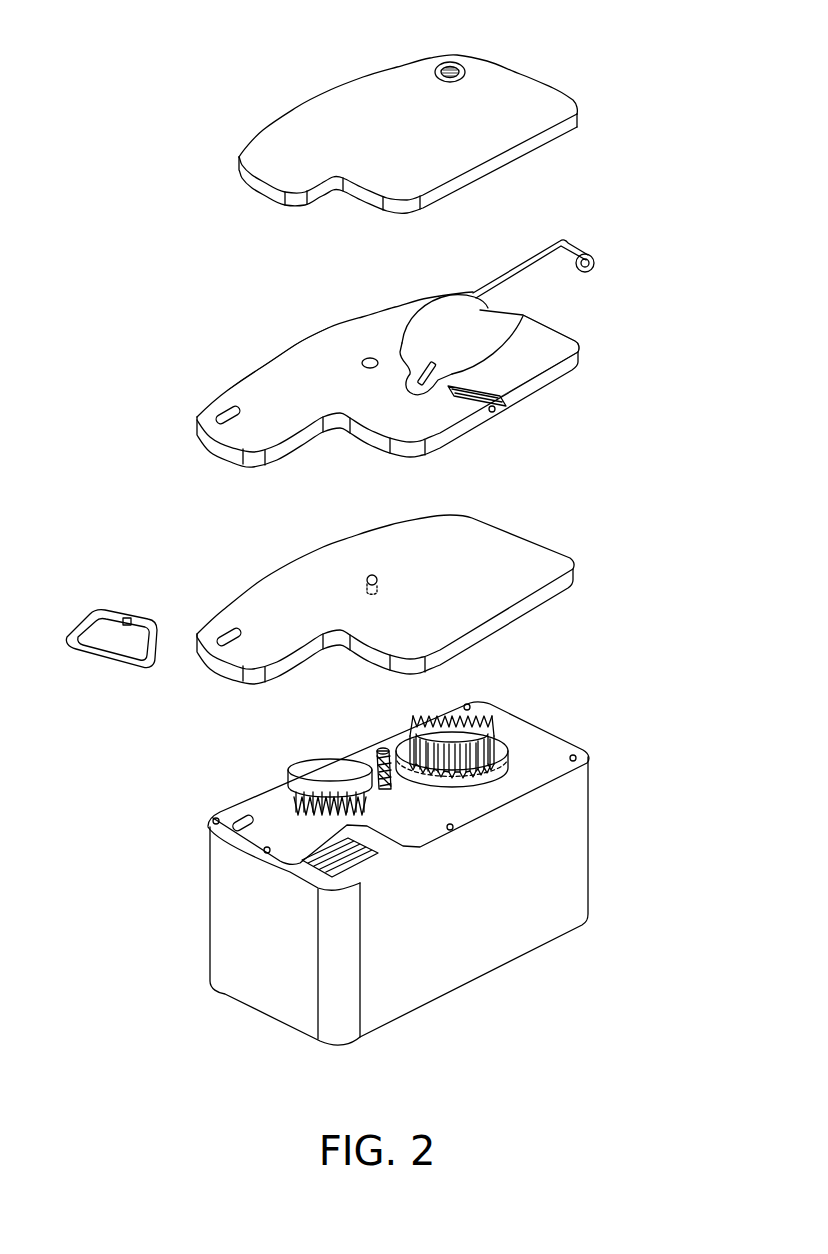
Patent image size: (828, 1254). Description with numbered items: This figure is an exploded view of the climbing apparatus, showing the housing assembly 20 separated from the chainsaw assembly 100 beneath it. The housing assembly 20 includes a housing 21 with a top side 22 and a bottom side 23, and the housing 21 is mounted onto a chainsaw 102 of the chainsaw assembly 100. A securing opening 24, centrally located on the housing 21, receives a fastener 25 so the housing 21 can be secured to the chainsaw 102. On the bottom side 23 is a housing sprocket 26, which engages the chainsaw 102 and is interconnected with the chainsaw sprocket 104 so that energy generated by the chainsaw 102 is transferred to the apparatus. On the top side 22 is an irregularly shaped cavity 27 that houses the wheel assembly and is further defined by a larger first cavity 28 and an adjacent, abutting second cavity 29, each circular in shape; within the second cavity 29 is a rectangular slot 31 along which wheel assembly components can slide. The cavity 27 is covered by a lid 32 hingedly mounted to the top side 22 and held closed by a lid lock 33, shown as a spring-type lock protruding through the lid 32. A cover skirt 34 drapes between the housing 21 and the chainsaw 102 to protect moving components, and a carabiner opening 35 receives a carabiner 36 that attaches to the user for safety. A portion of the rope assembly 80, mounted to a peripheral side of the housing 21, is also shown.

The housing assembly 20 is at (439, 364).
The housing 21 is at (303, 337).
The top side 22 is at (267, 383).
The bottom side 23 is at (537, 395).
The securing opening 24 is at (370, 357).
The fastener 25 is at (380, 755).
The housing sprocket 26 is at (490, 752).
The cavity 27 is at (407, 343).
The first cavity 28 is at (460, 347).
The second cavity 29 is at (440, 385).
The slot 31 is at (423, 390).
The lid 32 is at (408, 108).
The lid lock 33 is at (452, 62).
The cover skirt 34 is at (537, 543).
The carabiner opening 35 is at (230, 405).
The carabiner 36 is at (128, 618).
The rope assembly 80 is at (507, 280).
The chainsaw assembly 100 is at (429, 883).
The chainsaw 102 is at (542, 856).
The chainsaw sprocket 104 is at (323, 780).